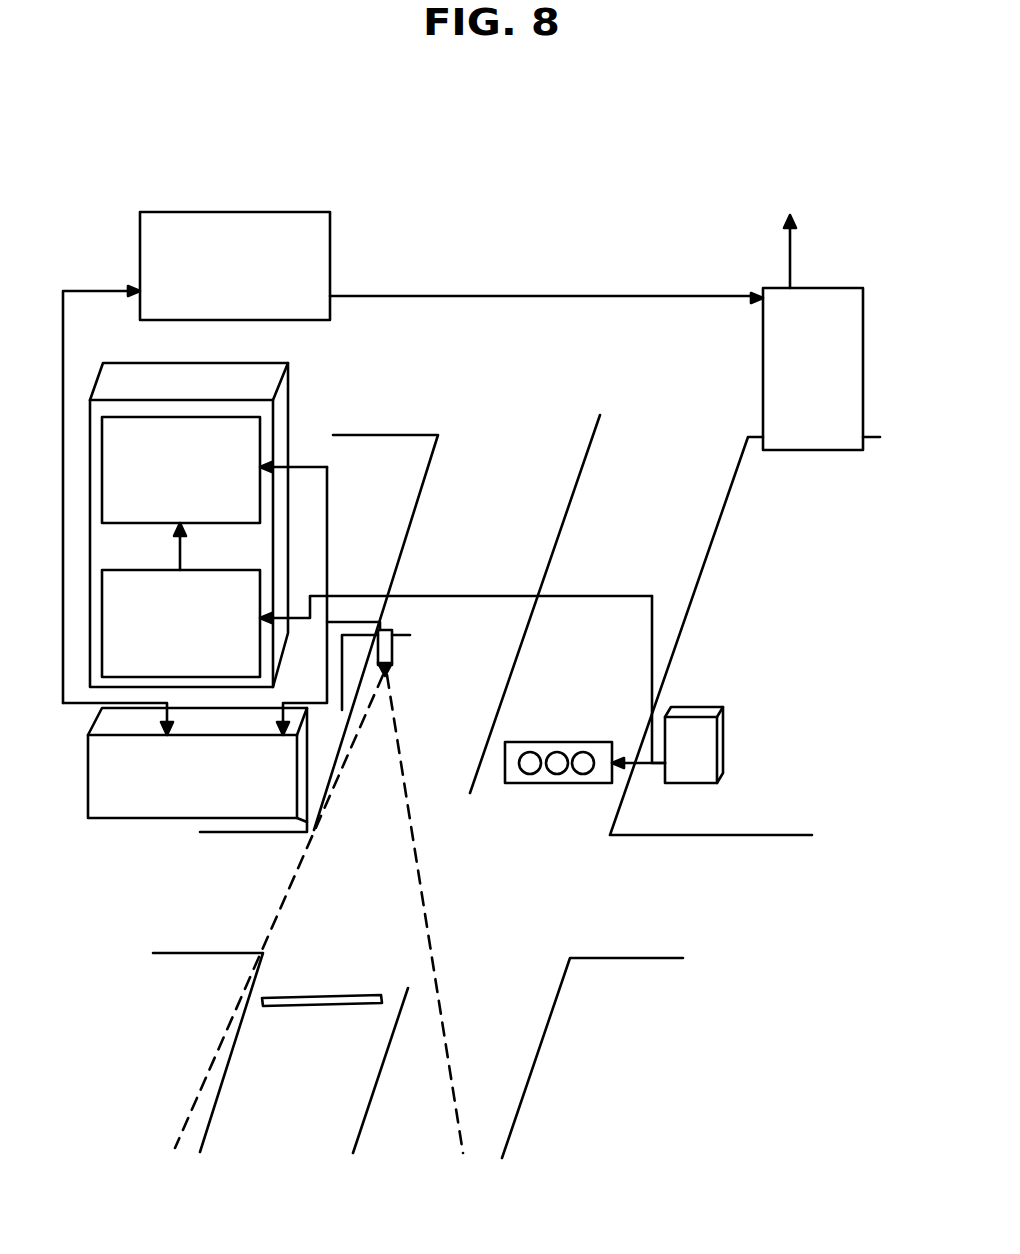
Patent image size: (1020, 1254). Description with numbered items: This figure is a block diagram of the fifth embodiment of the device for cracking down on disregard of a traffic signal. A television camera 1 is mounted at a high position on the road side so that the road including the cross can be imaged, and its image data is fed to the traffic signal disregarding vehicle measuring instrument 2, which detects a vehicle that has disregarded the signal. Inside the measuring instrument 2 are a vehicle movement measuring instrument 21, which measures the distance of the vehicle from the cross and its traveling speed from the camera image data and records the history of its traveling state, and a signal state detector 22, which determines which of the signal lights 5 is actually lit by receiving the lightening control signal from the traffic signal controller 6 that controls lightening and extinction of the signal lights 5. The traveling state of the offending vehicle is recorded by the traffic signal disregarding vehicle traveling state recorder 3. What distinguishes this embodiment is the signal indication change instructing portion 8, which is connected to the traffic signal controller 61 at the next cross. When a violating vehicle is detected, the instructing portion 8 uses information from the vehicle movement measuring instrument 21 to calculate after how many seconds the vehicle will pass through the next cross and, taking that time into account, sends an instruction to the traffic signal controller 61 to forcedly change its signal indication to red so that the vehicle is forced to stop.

The television camera 1 is at (392, 630).
The traffic signal disregarding vehicle measuring instrument 2 is at (182, 499).
The vehicle movement measuring instrument 21 is at (203, 524).
The signal state detector 22 is at (155, 570).
The traffic signal disregarding vehicle traveling state recorder 3 is at (127, 820).
The signal lights 5 is at (557, 742).
The traffic signal controller 6 is at (697, 707).
The traffic signal controller at the next cross 61 is at (828, 451).
The signal indication change instructing portion 8 is at (332, 222).